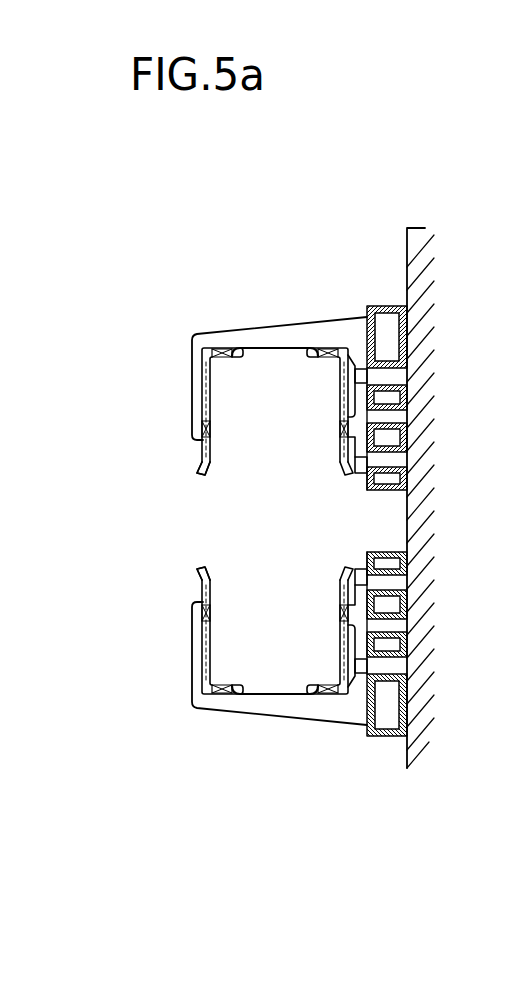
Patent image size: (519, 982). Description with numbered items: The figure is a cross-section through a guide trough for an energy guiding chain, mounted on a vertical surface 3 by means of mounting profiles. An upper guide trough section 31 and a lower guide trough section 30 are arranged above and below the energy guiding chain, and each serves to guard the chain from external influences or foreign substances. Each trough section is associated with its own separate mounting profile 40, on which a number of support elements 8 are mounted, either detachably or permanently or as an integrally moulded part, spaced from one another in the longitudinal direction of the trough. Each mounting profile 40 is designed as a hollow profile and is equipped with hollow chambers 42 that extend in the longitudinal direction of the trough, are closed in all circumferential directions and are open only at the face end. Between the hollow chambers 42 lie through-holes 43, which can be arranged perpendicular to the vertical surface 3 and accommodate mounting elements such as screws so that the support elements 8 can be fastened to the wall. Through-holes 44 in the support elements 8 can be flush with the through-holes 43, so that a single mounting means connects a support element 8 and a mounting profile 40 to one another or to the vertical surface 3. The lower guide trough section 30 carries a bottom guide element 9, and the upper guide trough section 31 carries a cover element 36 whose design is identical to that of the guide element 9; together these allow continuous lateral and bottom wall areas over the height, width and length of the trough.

The vertical surface 3 is at (412, 726).
The support element 8 is at (200, 376).
The guide element 9 is at (203, 593).
The lower guide trough section 30 is at (179, 622).
The upper guide trough section 31 is at (178, 408).
The cover element 36 is at (208, 447).
The mounting profile 40 is at (382, 317).
The hollow chamber 42 is at (380, 440).
The through-hole 43 is at (390, 667).
The through-hole 44 is at (362, 666).